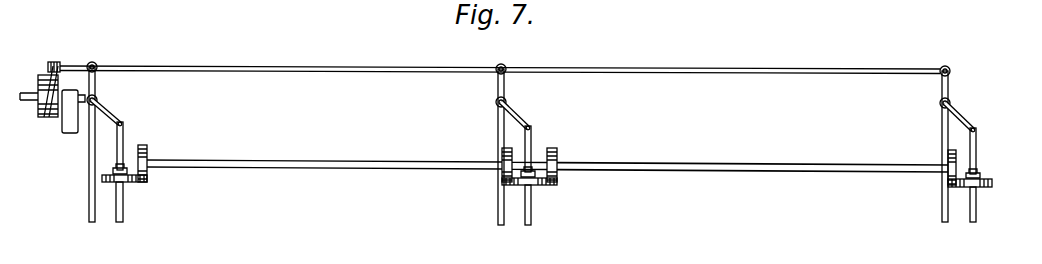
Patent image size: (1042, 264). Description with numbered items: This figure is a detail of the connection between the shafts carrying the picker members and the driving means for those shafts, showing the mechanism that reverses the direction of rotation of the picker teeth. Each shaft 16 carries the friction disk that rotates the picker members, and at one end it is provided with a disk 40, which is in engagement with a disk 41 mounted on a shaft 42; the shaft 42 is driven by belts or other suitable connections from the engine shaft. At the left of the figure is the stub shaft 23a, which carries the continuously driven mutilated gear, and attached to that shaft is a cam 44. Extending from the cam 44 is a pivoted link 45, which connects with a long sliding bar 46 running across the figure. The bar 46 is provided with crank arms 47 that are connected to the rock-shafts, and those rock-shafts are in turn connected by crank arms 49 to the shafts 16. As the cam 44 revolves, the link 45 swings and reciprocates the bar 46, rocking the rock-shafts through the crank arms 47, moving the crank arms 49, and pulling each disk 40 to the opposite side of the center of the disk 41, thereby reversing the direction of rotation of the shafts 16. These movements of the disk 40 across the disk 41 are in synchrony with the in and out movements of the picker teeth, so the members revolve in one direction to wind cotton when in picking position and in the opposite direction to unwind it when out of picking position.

The shaft 16 is at (124, 207).
The stub shaft 23a is at (26, 102).
The disk 40 is at (102, 178).
The disk 41 is at (148, 152).
The shaft 42 is at (708, 162).
The cam 44 is at (52, 118).
The pivoted link 45 is at (58, 65).
The sliding bar 46 is at (283, 66).
The crank arms 47 is at (97, 86).
The crank arms 49 is at (108, 112).